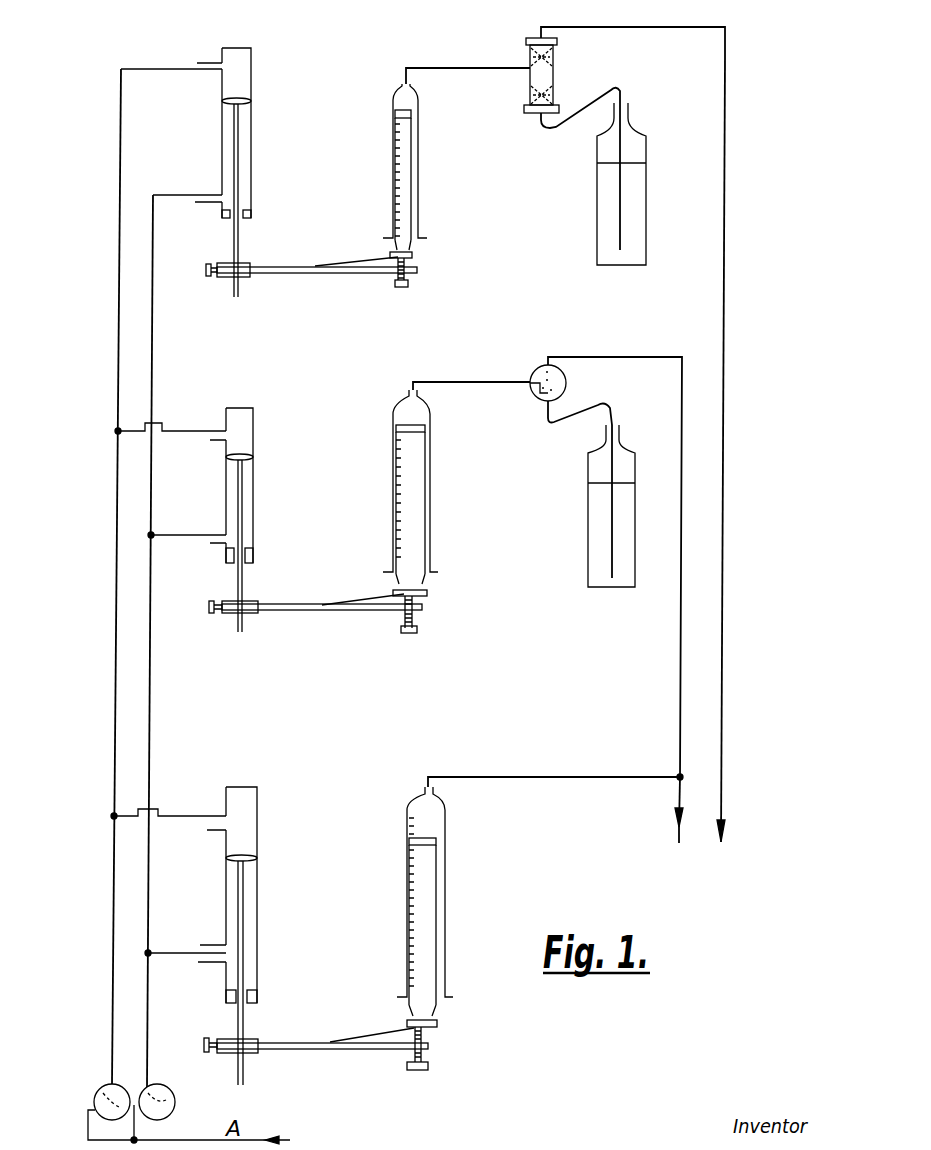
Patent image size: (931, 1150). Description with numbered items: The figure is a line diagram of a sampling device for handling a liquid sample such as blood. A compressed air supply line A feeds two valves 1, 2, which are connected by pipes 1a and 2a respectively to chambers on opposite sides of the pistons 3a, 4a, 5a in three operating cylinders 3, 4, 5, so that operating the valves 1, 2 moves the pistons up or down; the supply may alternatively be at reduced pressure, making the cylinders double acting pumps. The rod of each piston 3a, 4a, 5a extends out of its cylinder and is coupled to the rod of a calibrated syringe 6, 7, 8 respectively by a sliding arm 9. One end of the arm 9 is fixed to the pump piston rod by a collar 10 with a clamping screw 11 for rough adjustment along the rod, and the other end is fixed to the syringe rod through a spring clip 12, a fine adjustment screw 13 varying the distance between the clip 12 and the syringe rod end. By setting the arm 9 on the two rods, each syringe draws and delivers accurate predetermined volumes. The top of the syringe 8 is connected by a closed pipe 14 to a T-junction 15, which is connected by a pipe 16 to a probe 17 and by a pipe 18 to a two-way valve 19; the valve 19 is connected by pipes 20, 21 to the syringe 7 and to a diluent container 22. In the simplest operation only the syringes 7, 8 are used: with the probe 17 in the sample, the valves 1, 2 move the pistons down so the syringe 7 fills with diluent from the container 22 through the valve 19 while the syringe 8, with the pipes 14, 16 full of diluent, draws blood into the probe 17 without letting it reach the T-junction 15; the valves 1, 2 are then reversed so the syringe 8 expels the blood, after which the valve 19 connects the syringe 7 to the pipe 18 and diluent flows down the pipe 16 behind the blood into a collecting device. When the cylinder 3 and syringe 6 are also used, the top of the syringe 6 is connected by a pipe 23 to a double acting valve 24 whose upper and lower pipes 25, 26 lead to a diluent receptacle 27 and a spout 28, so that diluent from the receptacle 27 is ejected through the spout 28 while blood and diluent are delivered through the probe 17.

The valve 1 is at (106, 1090).
The valve 2 is at (163, 1090).
The pipe 1a is at (116, 720).
The pipe 2a is at (155, 720).
The operating cylinder 3 is at (252, 140).
The piston 3a is at (240, 99).
The operating cylinder 4 is at (253, 512).
The piston 4a is at (243, 455).
The operating cylinder 5 is at (257, 898).
The piston 5a is at (245, 855).
The syringe 6 is at (418, 188).
The syringe 7 is at (430, 483).
The syringe 8 is at (445, 913).
The sliding arm 9 is at (342, 273).
The collar 10 is at (228, 268).
The clamping screw 11 is at (210, 266).
The spring clip 12 is at (368, 261).
The fine adjustment screw 13 is at (408, 284).
The pipe 14 is at (537, 777).
The T-junction 15 is at (677, 775).
The pipe 16 is at (678, 796).
The probe 17 is at (677, 833).
The pipe 18 is at (679, 700).
The two-way valve 19 is at (568, 380).
The pipe 20 is at (483, 382).
The pipe 21 is at (550, 421).
The diluent container 22 is at (588, 533).
The pipe 23 is at (450, 68).
The double acting valve 24 is at (555, 70).
The upper pipe 25 is at (690, 27).
The lower pipe 26 is at (548, 129).
The diluent receptacle 27 is at (597, 206).
The spout 28 is at (722, 796).